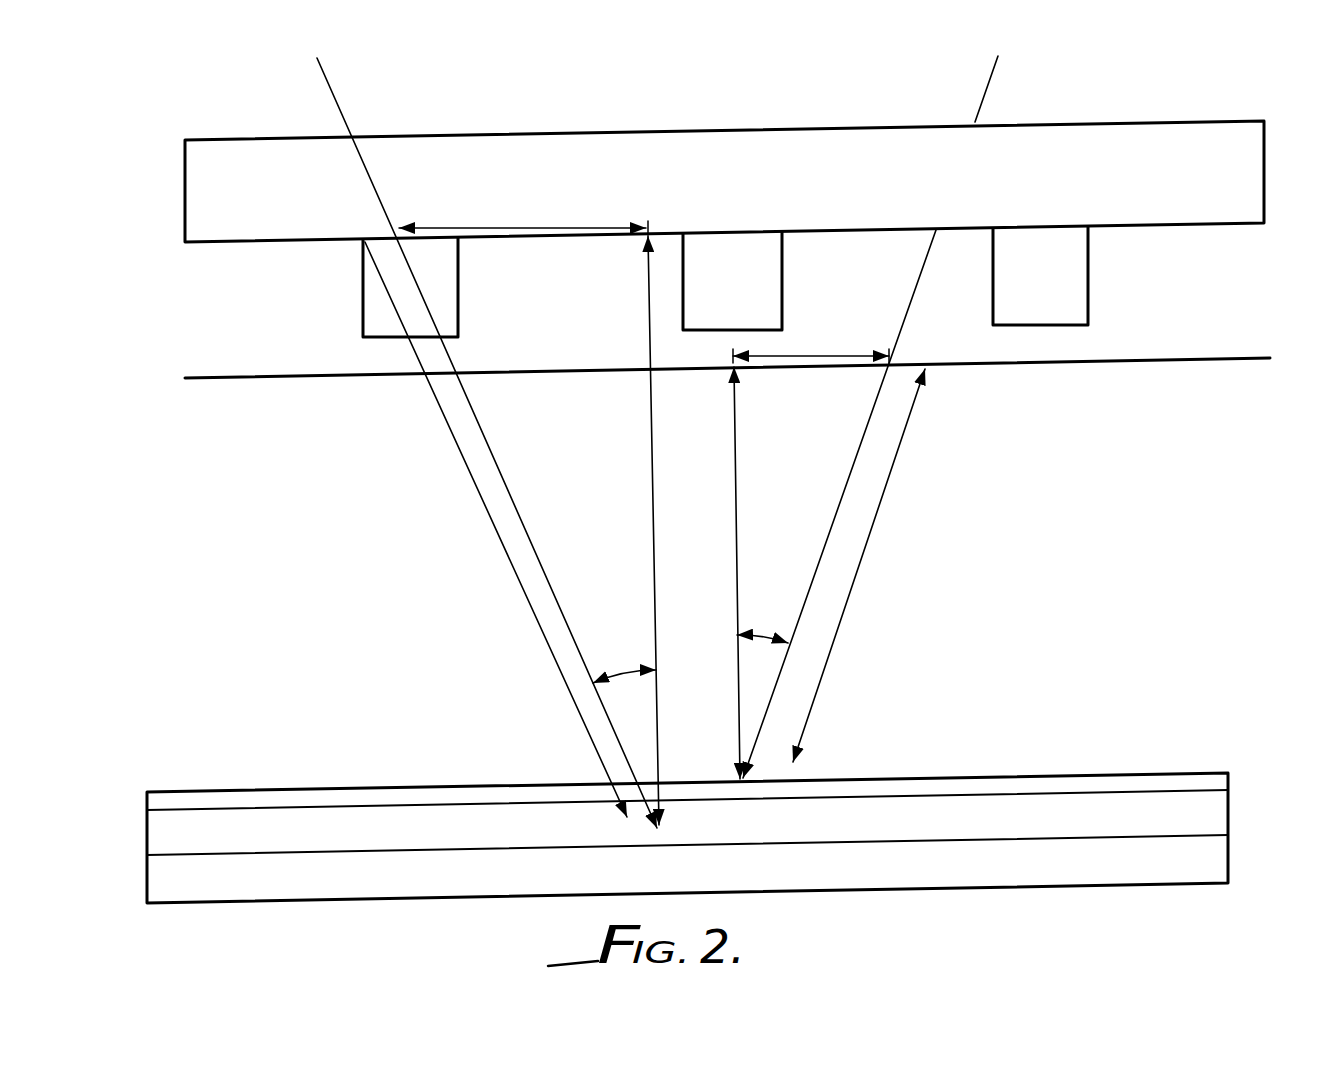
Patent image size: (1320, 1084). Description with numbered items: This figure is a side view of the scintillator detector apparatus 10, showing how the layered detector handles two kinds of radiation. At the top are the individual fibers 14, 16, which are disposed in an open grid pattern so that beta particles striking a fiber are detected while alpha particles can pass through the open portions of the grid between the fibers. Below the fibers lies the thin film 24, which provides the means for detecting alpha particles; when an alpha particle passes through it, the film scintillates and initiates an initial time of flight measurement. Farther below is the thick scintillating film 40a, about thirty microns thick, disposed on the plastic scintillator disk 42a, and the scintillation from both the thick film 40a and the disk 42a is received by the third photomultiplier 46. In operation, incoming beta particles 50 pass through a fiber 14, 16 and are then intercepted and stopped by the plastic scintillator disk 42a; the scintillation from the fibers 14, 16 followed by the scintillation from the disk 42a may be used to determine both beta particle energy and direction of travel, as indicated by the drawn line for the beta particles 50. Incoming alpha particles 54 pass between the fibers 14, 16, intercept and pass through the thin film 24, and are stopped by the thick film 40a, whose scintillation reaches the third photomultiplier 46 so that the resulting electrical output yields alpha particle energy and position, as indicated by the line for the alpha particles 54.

The scintillator detector apparatus 10 is at (1218, 479).
The fiber 14 is at (1203, 122).
The fiber 16 is at (458, 284).
The thin film 24 is at (1249, 361).
The thick scintillating film 40a is at (1188, 773).
The plastic scintillator disk 42a is at (1222, 817).
The third photomultiplier 46 is at (1228, 857).
The beta particles 50 is at (330, 93).
The alpha particles 54 is at (986, 90).